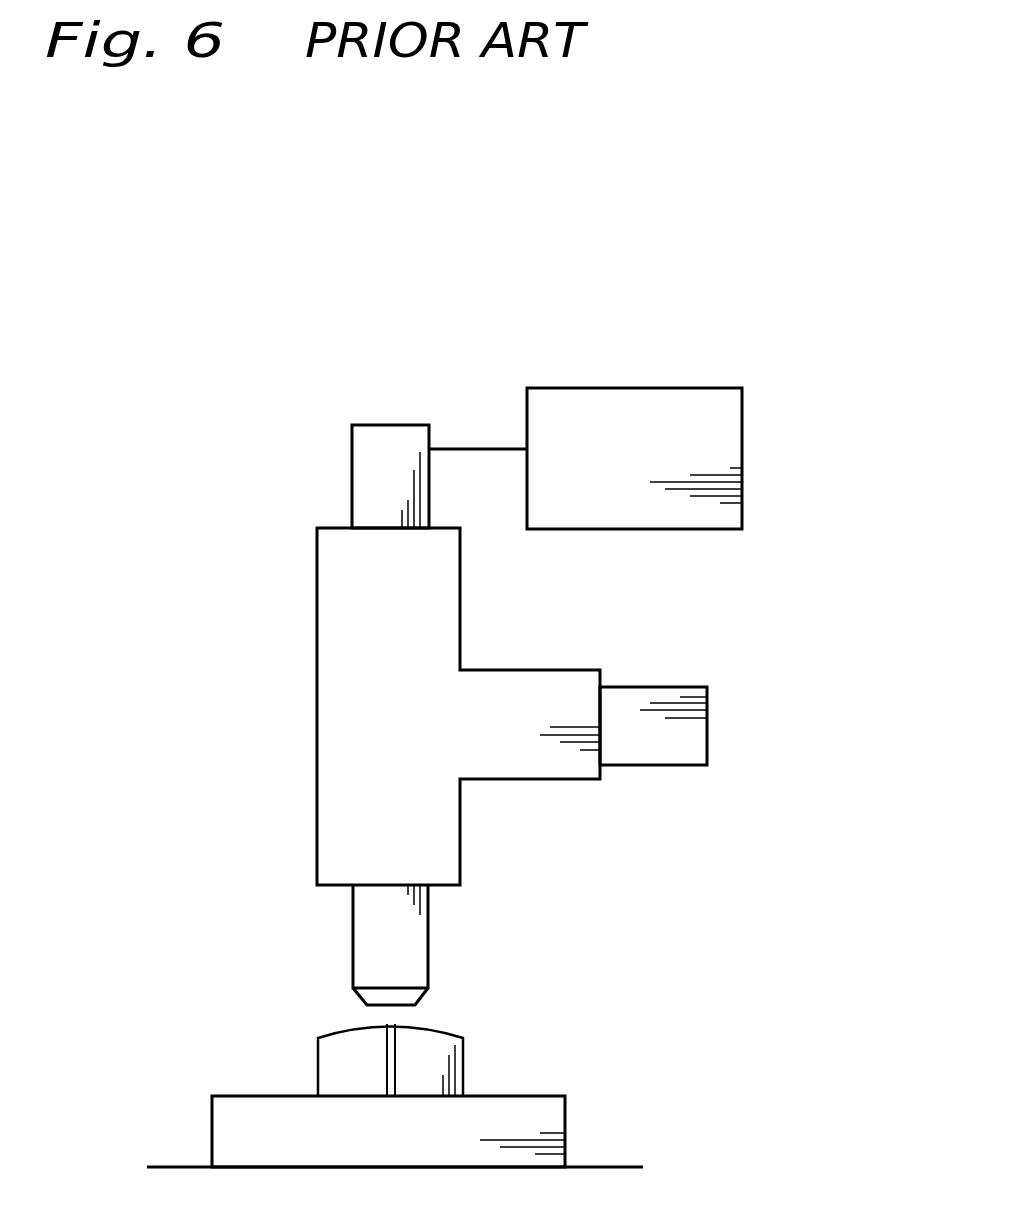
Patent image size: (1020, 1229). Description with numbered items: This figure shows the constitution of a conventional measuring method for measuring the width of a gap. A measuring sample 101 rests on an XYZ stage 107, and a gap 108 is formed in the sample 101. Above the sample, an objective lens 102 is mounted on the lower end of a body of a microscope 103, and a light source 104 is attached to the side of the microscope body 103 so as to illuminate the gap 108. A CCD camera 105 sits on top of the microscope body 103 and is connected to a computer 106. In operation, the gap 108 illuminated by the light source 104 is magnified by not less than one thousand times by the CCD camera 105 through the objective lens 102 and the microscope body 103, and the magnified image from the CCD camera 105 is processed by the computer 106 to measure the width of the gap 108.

The measuring sample 101 is at (435, 1032).
The objective lens 102 is at (410, 932).
The body of a microscope 103 is at (340, 695).
The light source 104 is at (697, 745).
The CCD camera 105 is at (355, 458).
The computer 106 is at (733, 456).
The XYZ stage 107 is at (555, 1110).
The gap 108 is at (392, 1023).